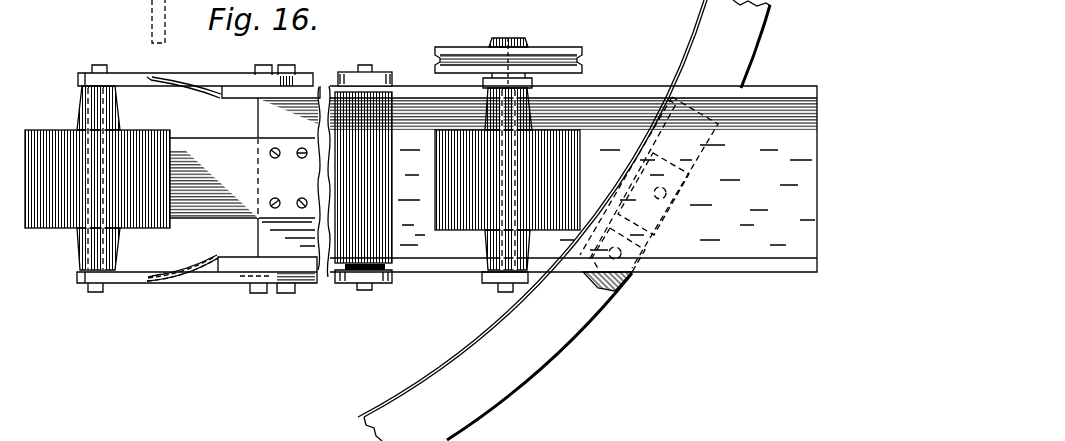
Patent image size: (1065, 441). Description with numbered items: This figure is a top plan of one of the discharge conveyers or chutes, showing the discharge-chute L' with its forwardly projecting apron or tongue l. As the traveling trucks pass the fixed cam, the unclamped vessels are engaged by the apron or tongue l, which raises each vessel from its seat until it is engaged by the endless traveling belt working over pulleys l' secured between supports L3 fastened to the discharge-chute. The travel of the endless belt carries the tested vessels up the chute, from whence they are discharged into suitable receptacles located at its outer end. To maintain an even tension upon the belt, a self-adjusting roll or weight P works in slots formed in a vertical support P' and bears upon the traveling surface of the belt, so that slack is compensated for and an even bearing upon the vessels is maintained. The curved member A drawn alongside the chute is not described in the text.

The supports L3 is at (183, 80).
The apron or tongue l is at (244, 177).
The pulleys l' is at (311, 178).
The self-adjusting roll or weight P is at (372, 167).
The vertical support P' is at (373, 288).
The discharge-chute L' is at (649, 184).
The ring rail A is at (564, 220).